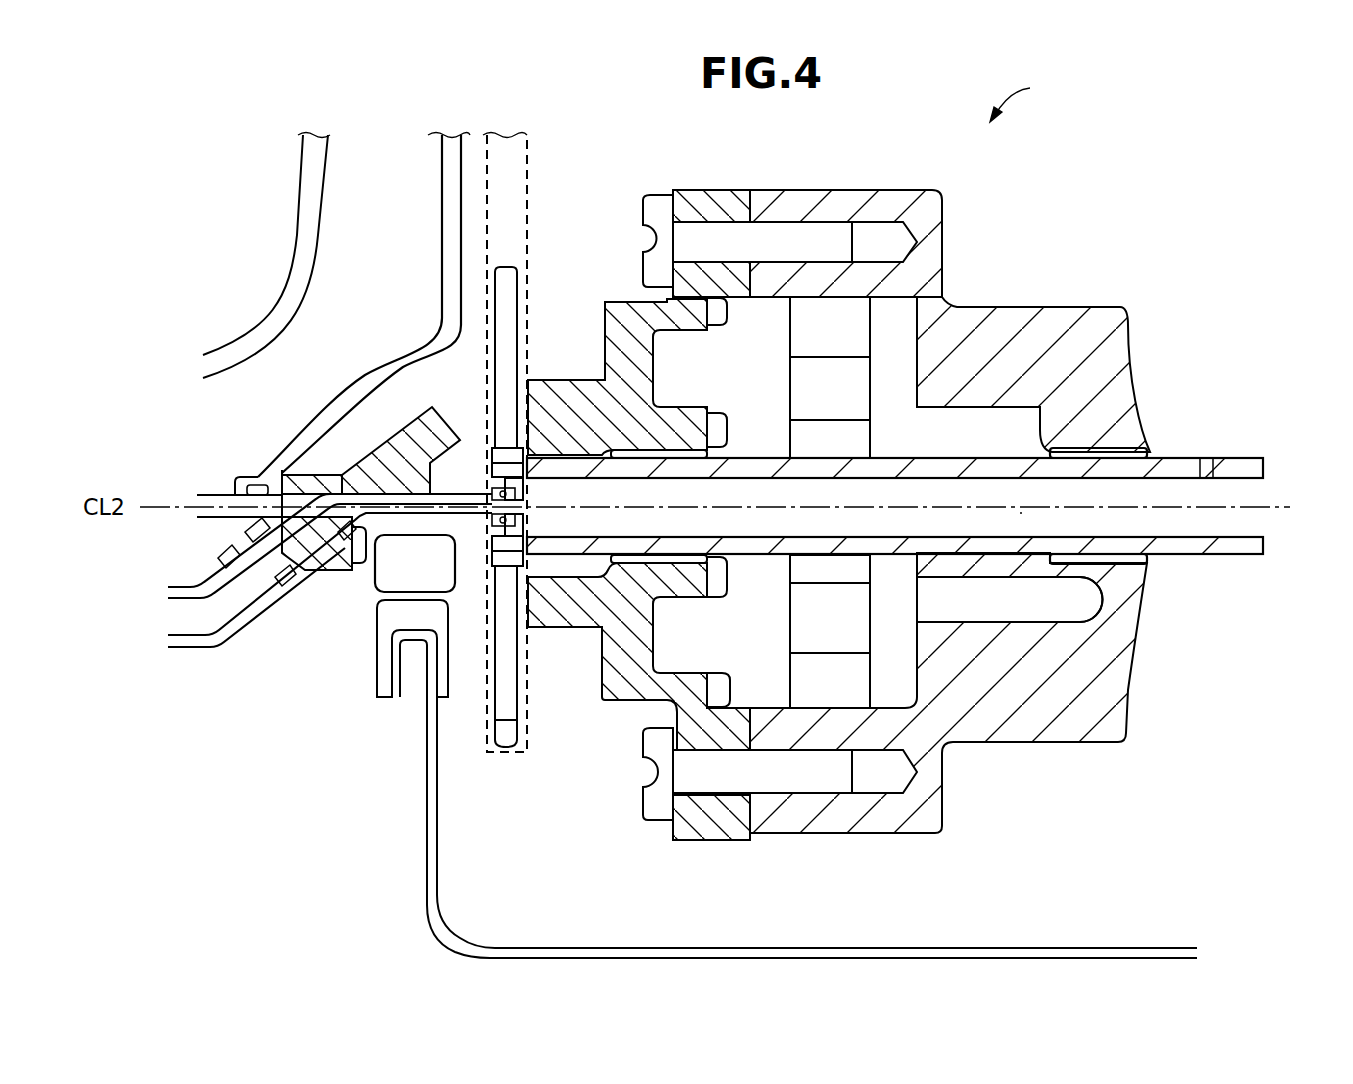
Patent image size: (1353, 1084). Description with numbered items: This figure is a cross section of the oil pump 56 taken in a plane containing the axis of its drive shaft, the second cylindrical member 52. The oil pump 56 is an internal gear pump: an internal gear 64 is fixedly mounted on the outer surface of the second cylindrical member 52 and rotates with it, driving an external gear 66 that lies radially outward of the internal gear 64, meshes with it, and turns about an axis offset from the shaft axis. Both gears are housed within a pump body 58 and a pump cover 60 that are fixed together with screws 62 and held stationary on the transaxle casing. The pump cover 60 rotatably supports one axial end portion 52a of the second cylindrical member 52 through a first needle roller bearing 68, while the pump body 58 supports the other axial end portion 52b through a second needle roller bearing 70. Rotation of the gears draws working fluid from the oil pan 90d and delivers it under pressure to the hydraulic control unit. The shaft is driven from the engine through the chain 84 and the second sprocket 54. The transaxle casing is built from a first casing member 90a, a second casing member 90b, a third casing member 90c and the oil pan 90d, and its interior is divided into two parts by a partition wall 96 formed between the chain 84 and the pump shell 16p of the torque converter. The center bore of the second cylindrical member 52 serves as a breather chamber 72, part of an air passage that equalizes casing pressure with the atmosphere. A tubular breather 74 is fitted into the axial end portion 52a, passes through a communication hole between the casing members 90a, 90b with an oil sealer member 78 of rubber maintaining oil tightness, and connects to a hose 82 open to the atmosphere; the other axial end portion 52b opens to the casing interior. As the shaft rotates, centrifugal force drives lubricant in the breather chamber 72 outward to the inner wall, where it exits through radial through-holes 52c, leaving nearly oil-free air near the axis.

The pump shell 16p is at (302, 265).
The second cylindrical member 52 is at (1148, 543).
The one axial end portion 52a is at (492, 472).
The other axial end portion 52b is at (1265, 546).
The radial through-holes 52c is at (1205, 458).
The second sprocket 54 is at (510, 735).
The oil pump 56 is at (1025, 98).
The pump body 58 is at (1007, 730).
The pump cover 60 is at (563, 617).
The screws 62 is at (655, 210).
The internal gear 64 is at (830, 447).
The external gear 66 is at (830, 390).
The first needle roller bearing 68 is at (653, 557).
The second needle roller bearing 70 is at (1107, 557).
The breather chamber 72 is at (1020, 513).
The breather 74 is at (352, 497).
The oil sealer member 78 is at (398, 445).
The hose 82 is at (243, 607).
The chain 84 is at (505, 196).
The first casing member 90a is at (218, 495).
The second casing member 90b is at (387, 573).
The third casing member 90c is at (387, 657).
The oil pan 90d is at (705, 947).
The partition wall 96 is at (448, 218).